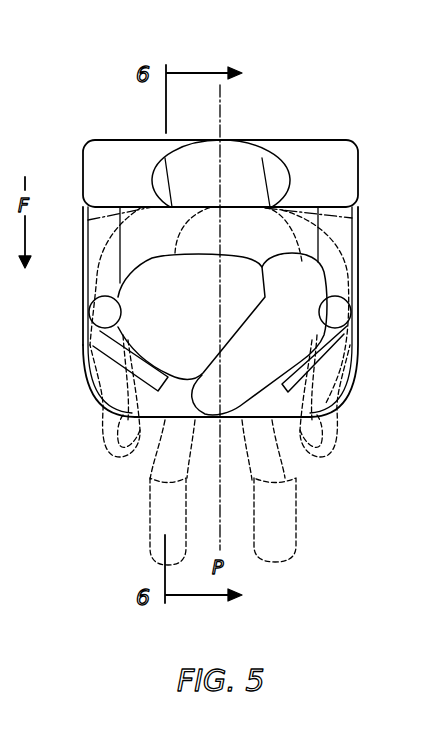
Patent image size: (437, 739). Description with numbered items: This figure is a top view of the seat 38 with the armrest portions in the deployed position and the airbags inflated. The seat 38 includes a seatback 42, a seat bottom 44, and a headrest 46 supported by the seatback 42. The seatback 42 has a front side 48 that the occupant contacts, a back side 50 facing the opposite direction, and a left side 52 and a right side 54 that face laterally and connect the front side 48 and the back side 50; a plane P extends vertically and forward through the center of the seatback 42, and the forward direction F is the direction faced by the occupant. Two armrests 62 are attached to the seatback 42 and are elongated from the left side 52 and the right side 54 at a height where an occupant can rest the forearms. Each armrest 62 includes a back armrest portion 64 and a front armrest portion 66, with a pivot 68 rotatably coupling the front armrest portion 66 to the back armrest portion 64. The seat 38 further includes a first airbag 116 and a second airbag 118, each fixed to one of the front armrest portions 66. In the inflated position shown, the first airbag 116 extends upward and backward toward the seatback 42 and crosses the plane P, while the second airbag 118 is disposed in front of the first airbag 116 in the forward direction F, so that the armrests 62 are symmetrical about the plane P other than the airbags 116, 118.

The seat 38 is at (269, 91).
The seatback 42 is at (358, 162).
The seat bottom 44 is at (167, 418).
The headrest 46 is at (261, 161).
The front side 48 is at (160, 207).
The back side 50 is at (121, 140).
The left side 52 is at (358, 183).
The right side 54 is at (83, 163).
The armrests 62 is at (83, 283).
The back armrest portion 64 is at (88, 255).
The front armrest portion 66 is at (120, 352).
The pivot 68 is at (103, 315).
The first airbag 116 is at (168, 345).
The second airbag 118 is at (273, 345).